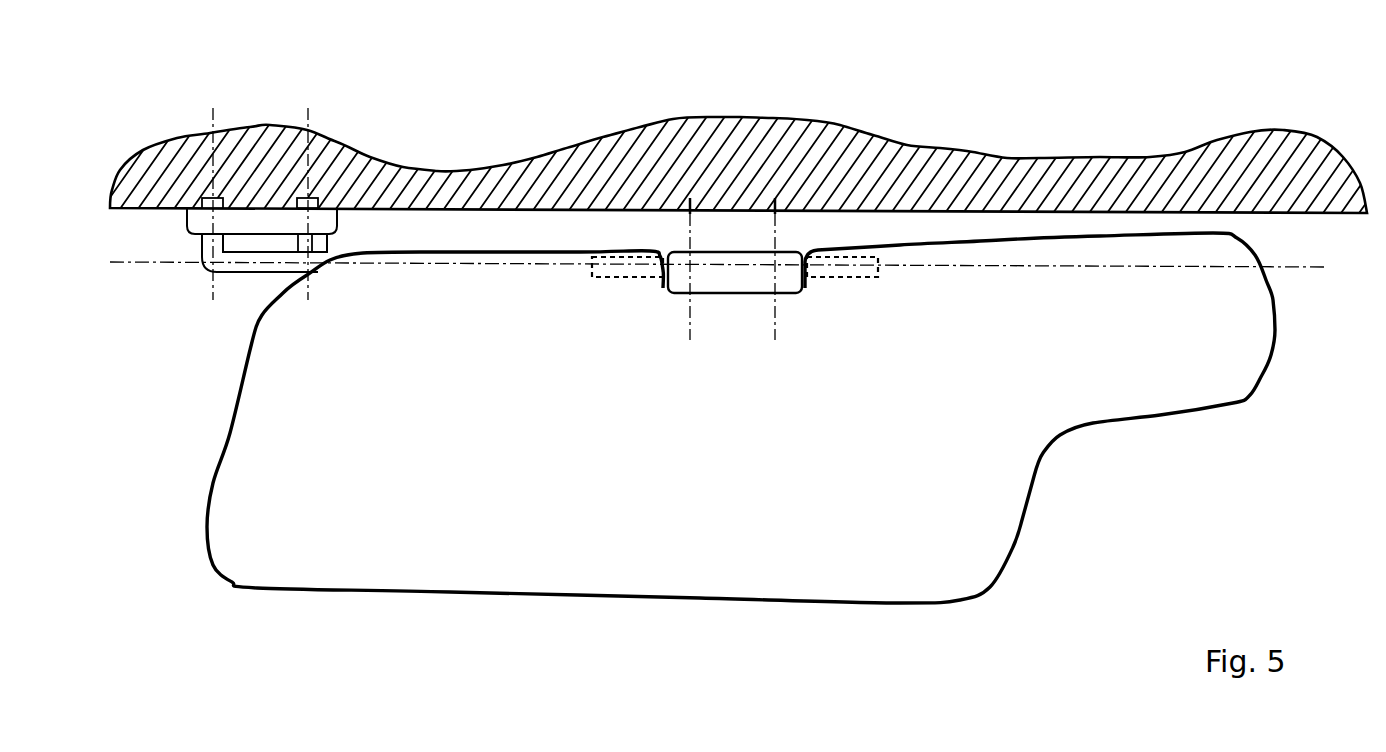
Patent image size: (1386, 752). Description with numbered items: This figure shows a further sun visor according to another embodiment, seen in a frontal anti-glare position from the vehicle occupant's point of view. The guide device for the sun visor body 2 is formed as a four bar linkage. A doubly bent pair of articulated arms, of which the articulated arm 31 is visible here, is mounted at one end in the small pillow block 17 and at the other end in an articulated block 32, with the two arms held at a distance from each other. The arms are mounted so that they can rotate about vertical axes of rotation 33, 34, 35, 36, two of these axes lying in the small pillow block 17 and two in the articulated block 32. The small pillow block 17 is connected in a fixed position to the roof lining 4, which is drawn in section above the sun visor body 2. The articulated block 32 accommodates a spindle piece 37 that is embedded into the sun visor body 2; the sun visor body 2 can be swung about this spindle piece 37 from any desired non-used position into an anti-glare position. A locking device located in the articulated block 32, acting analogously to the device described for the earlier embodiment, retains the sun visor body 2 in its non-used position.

The sun visor body 2 is at (997, 483).
The roof lining 4 is at (1227, 160).
The small pillow block 17 is at (272, 223).
The articulated arm 31 is at (256, 270).
The articulated block 32 is at (732, 257).
The vertical axis of rotation 33 is at (309, 118).
The vertical axis of rotation 34 is at (211, 118).
The vertical axis of rotation 35 is at (775, 230).
The vertical axis of rotation 36 is at (690, 230).
The spindle piece 37 is at (848, 263).